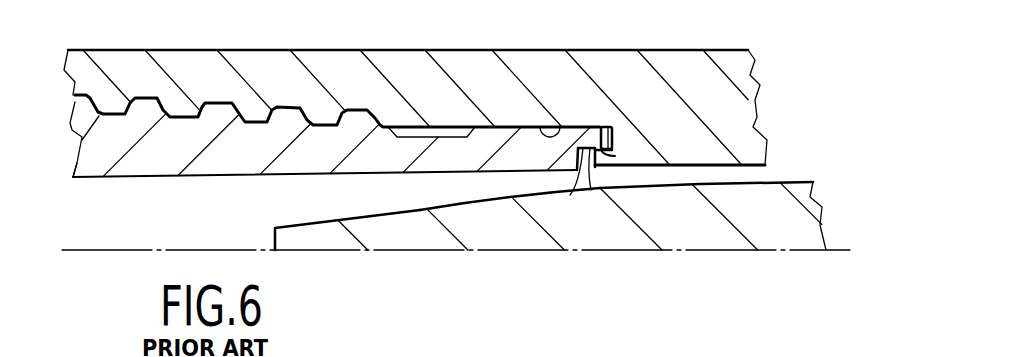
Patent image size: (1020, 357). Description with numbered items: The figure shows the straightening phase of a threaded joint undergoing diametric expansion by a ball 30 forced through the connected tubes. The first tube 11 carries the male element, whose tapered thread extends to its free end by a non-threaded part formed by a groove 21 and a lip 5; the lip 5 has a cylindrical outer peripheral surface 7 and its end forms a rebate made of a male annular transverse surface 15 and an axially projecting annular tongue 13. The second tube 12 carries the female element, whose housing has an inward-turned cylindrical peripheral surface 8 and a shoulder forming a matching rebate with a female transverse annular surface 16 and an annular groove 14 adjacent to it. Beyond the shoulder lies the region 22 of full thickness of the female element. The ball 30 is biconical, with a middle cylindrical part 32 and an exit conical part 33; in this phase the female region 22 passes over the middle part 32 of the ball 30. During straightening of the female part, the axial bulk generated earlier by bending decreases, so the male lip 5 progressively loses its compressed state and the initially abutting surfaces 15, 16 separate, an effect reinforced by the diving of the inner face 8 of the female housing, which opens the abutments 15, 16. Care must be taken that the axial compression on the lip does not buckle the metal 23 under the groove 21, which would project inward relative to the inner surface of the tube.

The lip 5 is at (520, 147).
The outer peripheral surface 7 is at (494, 118).
The peripheral surface 8 is at (562, 123).
The first tube 11 is at (95, 158).
The second tube 12 is at (715, 90).
The annular tongue 13 is at (613, 127).
The annular groove 14 is at (617, 153).
The male annular transverse surface 15 is at (570, 195).
The female transverse annular surface 16 is at (591, 190).
The groove 21 is at (427, 127).
The region of full thickness 22 is at (675, 148).
The metal under the groove 23 is at (182, 140).
The ball 30 is at (642, 217).
The middle cylindrical part 32 is at (793, 195).
The exit conical part 33 is at (385, 215).